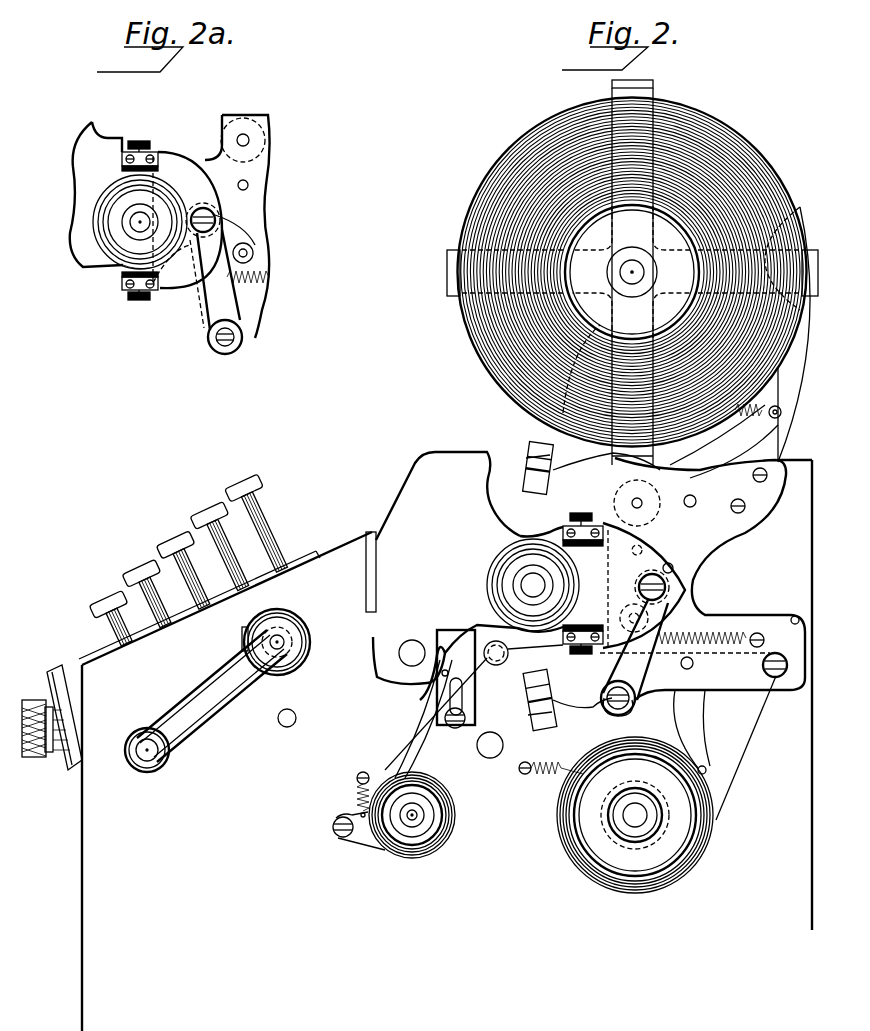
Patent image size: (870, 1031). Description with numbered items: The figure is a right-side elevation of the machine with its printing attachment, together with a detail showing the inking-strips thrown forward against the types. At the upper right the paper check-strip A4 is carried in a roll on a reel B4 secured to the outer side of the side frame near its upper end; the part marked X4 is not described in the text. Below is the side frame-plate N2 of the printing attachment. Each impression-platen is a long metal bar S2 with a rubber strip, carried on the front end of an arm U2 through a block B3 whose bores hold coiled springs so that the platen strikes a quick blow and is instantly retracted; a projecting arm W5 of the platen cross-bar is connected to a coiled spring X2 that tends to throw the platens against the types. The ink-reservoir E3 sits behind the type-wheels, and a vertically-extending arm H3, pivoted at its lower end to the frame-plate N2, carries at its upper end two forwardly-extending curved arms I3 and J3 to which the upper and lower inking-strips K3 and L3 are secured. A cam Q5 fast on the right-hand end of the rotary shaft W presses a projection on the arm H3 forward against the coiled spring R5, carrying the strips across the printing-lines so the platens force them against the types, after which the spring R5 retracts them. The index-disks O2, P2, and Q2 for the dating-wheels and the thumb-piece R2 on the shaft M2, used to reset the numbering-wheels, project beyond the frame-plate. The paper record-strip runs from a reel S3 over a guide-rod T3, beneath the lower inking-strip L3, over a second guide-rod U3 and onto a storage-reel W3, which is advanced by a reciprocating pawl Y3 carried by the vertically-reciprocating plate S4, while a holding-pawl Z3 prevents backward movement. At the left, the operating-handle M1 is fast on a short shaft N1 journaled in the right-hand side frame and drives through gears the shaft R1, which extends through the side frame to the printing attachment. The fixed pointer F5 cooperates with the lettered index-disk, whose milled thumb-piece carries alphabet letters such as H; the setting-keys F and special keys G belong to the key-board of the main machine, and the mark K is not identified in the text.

In FIG. 2, the paper check-strip A4 is at (478, 328).
In FIG. 2, the reel B4 is at (622, 238).
In FIG. 2, the spring connection X4 is at (735, 410).
In FIG. 2, the block B3 is at (537, 447).
In FIG. 2, the platen-bar S2 is at (530, 463).
In FIG. 2, the arm U2 is at (580, 470).
In FIG. 2, the projecting arm W5 is at (712, 466).
In FIG. 2, the side frame-plate N2 is at (772, 513).
In FIG. 2A, the upper inking-strip K3 is at (152, 153).
In FIG. 2, the upper inking-strip K3 is at (578, 544).
In FIG. 2A, the lower inking-strip L3 is at (157, 298).
In FIG. 2, the lower inking-strip L3 is at (580, 631).
In FIG. 2, the ink-reservoir E3 is at (577, 584).
In FIG. 2A, the index-disk O2 is at (104, 236).
In FIG. 2, the index-disk O2 is at (510, 548).
In FIG. 2A, the index-disk P2 is at (107, 222).
In FIG. 2, the index-disk P2 is at (505, 560).
In FIG. 2A, the index-disk Q2 is at (112, 208).
In FIG. 2, the index-disk Q2 is at (504, 580).
In FIG. 2A, the thumb-piece R2 is at (125, 205).
In FIG. 2, the thumb-piece R2 is at (527, 587).
In FIG. 2A, the shaft M2 is at (137, 224).
In FIG. 2, the shaft M2 is at (505, 608).
In FIG. 2A, the curved arm I3 is at (199, 170).
In FIG. 2, the curved arm I3 is at (643, 556).
In FIG. 2A, the cam Q5 is at (202, 227).
In FIG. 2, the cam Q5 is at (668, 597).
In FIG. 2A, the coiled spring R5 is at (230, 277).
In FIG. 2, the coiled spring R5 is at (662, 633).
In FIG. 2A, the curved arm J3 is at (178, 278).
In FIG. 2, the curved arm J3 is at (613, 653).
In FIG. 2A, the vertically-extending arm H3 is at (188, 307).
In FIG. 2, the vertically-extending arm H3 is at (603, 674).
In FIG. 2, the guide-rod T3 is at (765, 665).
In FIG. 2, the shaft R1 is at (411, 641).
In FIG. 2, the vertically-reciprocating plate S4 is at (463, 642).
In FIG. 2, the guide-rod U3 is at (500, 663).
In FIG. 2, the reciprocating pawl Y3 is at (410, 718).
In FIG. 2, the coiled spring X2 is at (583, 772).
In FIG. 2, the reel S3 is at (654, 824).
In FIG. 2, the storage-reel W3 is at (427, 838).
In FIG. 2, the holding-pawl Z3 is at (365, 840).
In FIG. 2, the fixed pointer F5 is at (52, 670).
In FIG. 2, the knob collar H is at (54, 719).
In FIG. 2, the special keys G is at (46, 728).
In FIG. 2, the setting-keys F is at (65, 732).
In FIG. 2, the pins K is at (253, 553).
In FIG. 2, the operating-handle M1 is at (223, 685).
In FIG. 2, the short shaft N1 is at (148, 752).
In FIG. 2A, the rotary shaft W is at (236, 250).